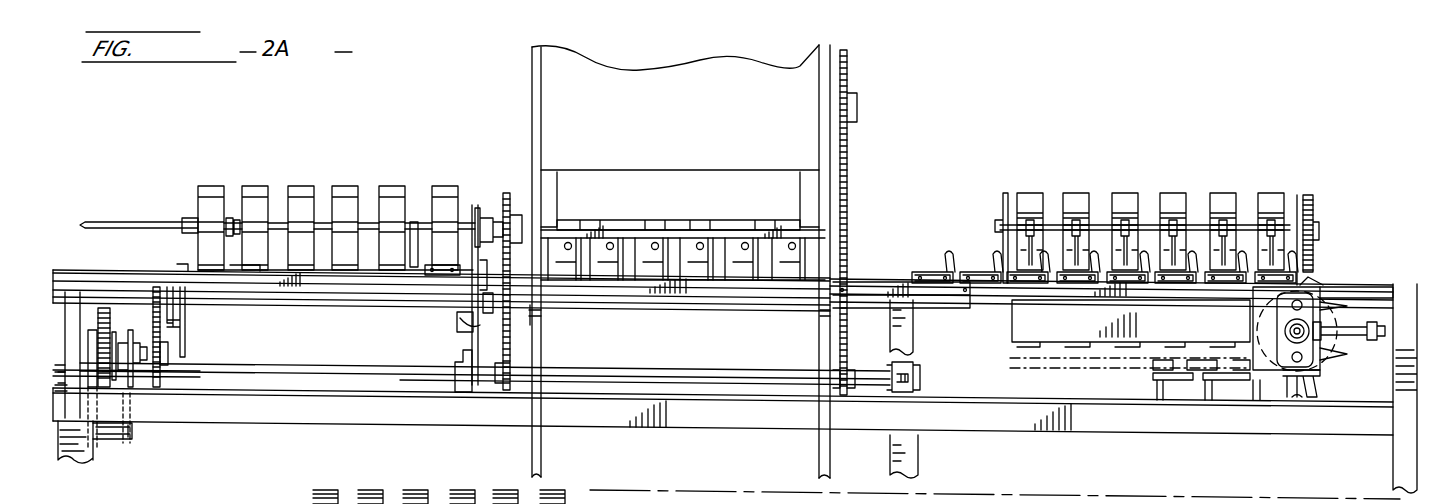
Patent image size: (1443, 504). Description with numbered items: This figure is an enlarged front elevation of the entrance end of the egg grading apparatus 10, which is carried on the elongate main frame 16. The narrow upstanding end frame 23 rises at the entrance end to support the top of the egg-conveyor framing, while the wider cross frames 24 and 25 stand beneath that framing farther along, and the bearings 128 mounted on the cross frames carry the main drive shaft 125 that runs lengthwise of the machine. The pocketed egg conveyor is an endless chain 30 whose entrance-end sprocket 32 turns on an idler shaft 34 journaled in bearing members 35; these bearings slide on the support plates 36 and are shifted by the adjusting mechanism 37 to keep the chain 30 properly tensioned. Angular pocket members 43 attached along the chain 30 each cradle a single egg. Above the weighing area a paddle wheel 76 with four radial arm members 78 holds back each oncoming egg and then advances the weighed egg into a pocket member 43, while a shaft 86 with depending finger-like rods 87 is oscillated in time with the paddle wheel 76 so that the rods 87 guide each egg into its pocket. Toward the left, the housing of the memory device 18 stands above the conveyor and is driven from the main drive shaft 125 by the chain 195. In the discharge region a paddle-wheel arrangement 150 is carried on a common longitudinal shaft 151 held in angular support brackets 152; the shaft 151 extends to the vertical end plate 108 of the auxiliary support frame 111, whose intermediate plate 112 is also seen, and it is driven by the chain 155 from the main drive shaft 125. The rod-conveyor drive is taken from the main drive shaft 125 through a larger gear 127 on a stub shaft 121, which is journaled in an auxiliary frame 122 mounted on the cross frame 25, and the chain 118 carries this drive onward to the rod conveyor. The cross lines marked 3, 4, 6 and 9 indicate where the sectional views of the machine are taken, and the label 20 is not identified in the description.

The section line 3- 3 is at (1427, 170).
The section line 4- 4 is at (1172, 152).
The section line 6- 6 is at (889, 90).
The section line 9- 9 is at (522, 198).
The grading apparatus 10 is at (63, 230).
The elongate frame 16 is at (1296, 440).
The memory device 18 is at (528, 100).
The yarn package holder assembly 20 is at (592, 300).
The end frame 23 is at (1393, 445).
The cross frame 24 is at (890, 450).
The cross frame 25 is at (93, 458).
The endless chain 30 is at (1157, 366).
The sprocket 32 is at (1270, 372).
The idler shaft 34 is at (1290, 331).
The bearing members 35 is at (1322, 343).
The support plates 36 is at (1372, 290).
The adjusting mechanism 37 is at (1340, 332).
The egg supporting pocket members 43 is at (1003, 255).
The paddle wheel device 76 is at (1122, 190).
The arm members 78 is at (1158, 205).
The shaft 86 is at (1080, 265).
The rods 87 is at (1031, 262).
The end plate 108 is at (474, 216).
The auxiliary support frame 111 is at (455, 362).
The intermediate plate 112 is at (186, 322).
The chain 118 is at (152, 332).
The stub shaft 121 is at (168, 352).
The auxiliary frame 122 is at (132, 437).
The main drive shaft 125 is at (725, 371).
The gear 127 is at (104, 306).
The bearings 128 is at (905, 371).
The paddle-wheel arrangement 150 is at (346, 186).
The longitudinal shaft 151 is at (117, 222).
The support brackets 152 is at (232, 216).
The chain 155 is at (473, 333).
The chain 195 is at (847, 198).